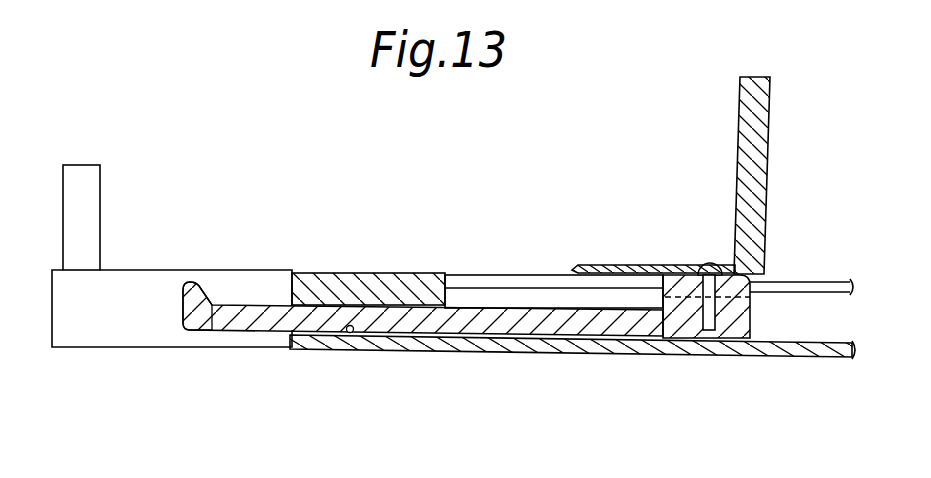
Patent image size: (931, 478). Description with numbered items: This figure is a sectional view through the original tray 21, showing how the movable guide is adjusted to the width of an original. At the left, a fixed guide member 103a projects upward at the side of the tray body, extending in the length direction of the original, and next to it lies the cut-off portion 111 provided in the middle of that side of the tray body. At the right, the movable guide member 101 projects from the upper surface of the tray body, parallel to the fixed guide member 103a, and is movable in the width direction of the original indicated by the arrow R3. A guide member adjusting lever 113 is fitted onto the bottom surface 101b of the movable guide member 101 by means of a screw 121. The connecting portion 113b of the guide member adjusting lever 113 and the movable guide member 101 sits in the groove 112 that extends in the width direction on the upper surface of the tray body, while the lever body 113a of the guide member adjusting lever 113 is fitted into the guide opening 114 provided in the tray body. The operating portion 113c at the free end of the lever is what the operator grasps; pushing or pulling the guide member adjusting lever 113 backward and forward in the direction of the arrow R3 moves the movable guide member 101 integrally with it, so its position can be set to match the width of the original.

The original tray 21 is at (50, 306).
The movable guide member 101 is at (738, 133).
The bottom surface of the movable guide member 101b is at (606, 265).
The fixed guide member 103a is at (102, 190).
The cut-off portion 111 is at (147, 292).
The groove 112 is at (503, 282).
The guide member adjusting lever 113 is at (232, 305).
The lever body 113a is at (409, 323).
The connecting portion 113b is at (752, 284).
The operating portion 113c is at (193, 332).
The guide opening 114 is at (350, 332).
The screw 121 is at (700, 264).
The arrow R3 is at (283, 363).